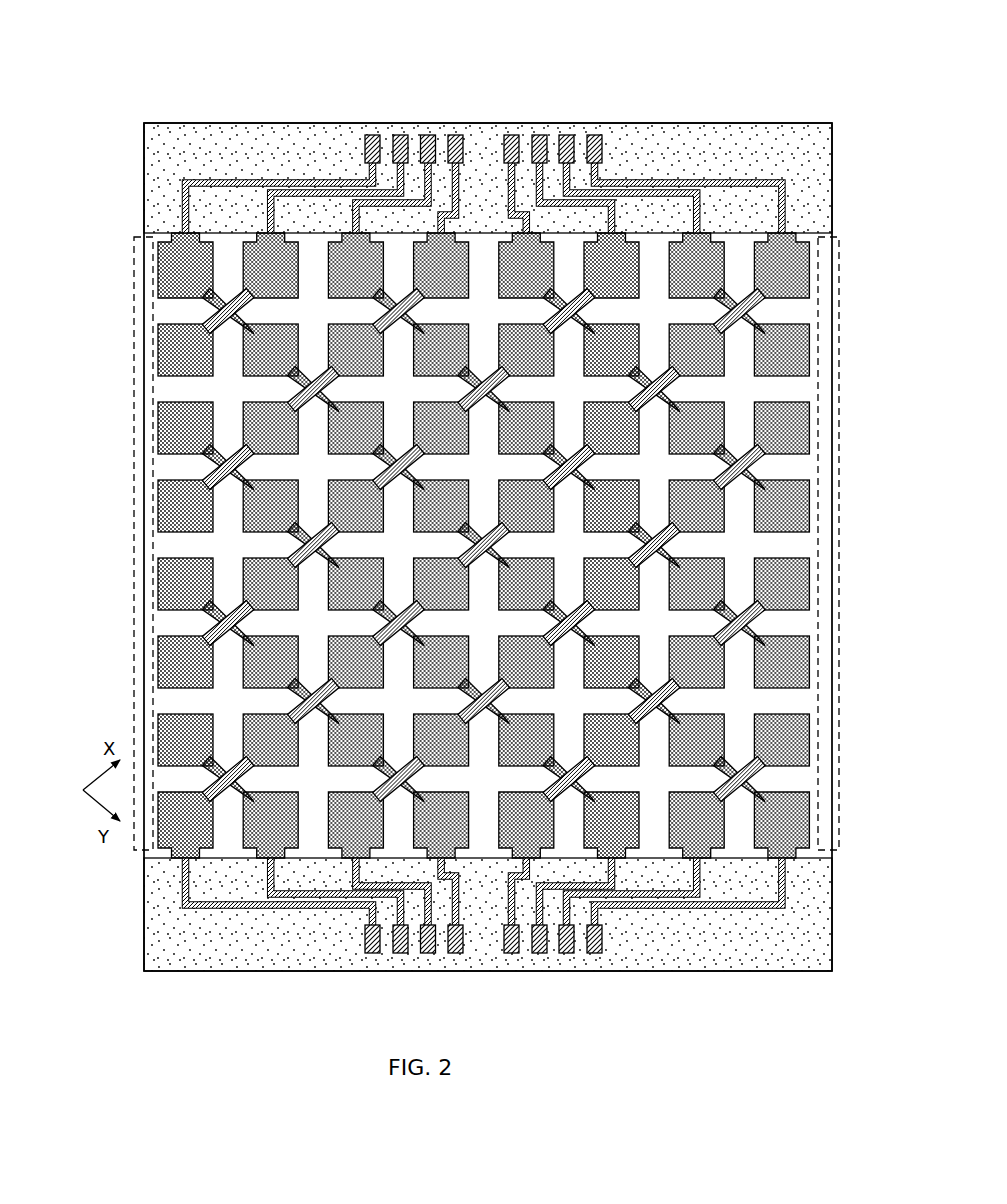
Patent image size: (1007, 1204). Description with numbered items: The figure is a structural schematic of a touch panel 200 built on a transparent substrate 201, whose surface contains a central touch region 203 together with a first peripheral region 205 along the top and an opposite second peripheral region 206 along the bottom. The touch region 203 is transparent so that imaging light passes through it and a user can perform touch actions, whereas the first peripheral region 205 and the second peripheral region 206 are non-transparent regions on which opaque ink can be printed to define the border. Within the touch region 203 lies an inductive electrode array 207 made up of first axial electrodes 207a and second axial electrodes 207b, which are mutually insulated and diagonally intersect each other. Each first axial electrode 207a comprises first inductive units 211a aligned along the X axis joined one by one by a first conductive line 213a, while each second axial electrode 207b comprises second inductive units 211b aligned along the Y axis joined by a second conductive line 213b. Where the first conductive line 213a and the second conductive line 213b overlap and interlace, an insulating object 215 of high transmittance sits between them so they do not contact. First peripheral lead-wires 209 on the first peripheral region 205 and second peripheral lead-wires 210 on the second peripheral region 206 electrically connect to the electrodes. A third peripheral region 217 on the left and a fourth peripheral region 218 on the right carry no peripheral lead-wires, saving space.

The touch panel 200 is at (684, 60).
The substrate 201 is at (699, 123).
The touch region 203 is at (410, 545).
The first peripheral region 205 is at (206, 137).
The second peripheral region 206 is at (207, 930).
The inductive electrode array 207 is at (410, 545).
The first axial electrode 207a is at (440, 505).
The second axial electrode 207b is at (440, 585).
The first peripheral lead-wires 209 is at (302, 182).
The second peripheral lead-wires 210 is at (645, 906).
The first inductive units 211a is at (172, 497).
The second inductive units 211b is at (172, 601).
The first conductive line 213a is at (213, 474).
The second conductive line 213b is at (213, 618).
The insulating object 215 is at (218, 316).
The third peripheral region 217 is at (134, 237).
The fourth peripheral region 218 is at (841, 237).